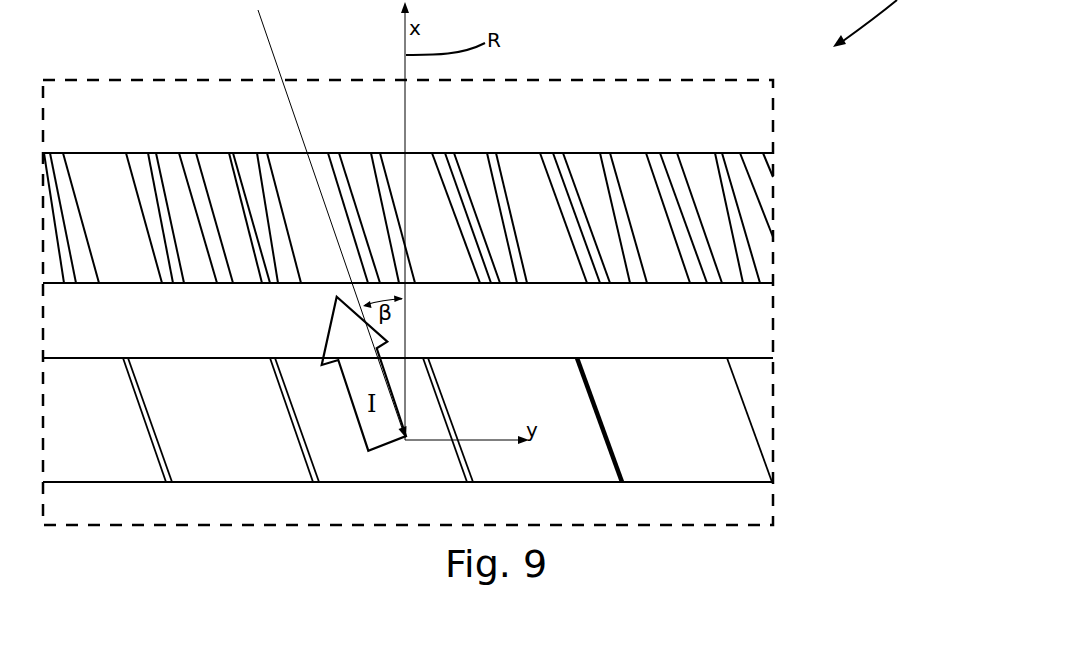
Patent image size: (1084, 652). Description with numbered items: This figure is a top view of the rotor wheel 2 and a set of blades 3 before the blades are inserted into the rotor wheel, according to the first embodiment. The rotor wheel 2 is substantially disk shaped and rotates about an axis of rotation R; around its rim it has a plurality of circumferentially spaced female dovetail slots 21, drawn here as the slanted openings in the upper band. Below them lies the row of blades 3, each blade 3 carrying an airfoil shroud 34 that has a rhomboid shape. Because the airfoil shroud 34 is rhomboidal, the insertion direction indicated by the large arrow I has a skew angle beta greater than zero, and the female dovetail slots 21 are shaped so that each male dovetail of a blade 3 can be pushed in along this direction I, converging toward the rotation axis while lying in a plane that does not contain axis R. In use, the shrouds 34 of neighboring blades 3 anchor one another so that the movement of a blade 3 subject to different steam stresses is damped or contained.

The rotor wheel 2 is at (705, 138).
The female dovetail slots 21 is at (327, 176).
The blades 3 is at (374, 497).
The airfoil shroud 34 is at (102, 448).